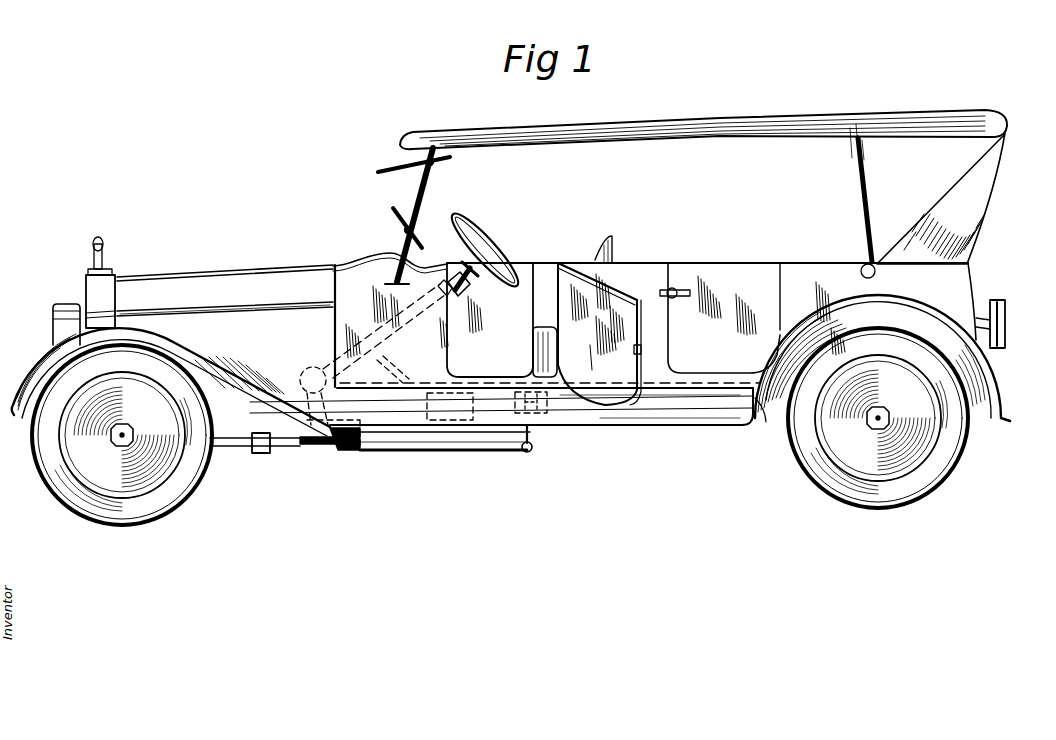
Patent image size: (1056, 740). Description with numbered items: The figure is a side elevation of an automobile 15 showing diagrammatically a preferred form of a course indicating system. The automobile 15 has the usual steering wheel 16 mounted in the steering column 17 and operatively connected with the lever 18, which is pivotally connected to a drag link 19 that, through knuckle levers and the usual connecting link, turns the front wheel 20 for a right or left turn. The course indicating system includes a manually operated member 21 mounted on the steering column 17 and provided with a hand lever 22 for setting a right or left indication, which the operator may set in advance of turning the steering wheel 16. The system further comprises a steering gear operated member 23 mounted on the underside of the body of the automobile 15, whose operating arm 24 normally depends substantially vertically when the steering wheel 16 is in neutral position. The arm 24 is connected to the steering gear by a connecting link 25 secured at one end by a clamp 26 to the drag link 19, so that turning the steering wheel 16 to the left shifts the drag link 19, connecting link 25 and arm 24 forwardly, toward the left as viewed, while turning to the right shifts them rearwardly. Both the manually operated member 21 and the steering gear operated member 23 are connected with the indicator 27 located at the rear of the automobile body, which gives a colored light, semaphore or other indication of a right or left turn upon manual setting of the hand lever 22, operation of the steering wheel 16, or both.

The automobile 15 is at (657, 365).
The steering wheel 16 is at (477, 227).
The steering column 17 is at (448, 262).
The lever 18 is at (355, 460).
The drag link 19 is at (233, 447).
The front wheel 20 is at (132, 502).
The manually operated member 21 is at (477, 287).
The hand lever 22 is at (468, 300).
The steering gear operated member 23 is at (548, 400).
The operating arm 24 is at (533, 447).
The connecting link 25 is at (385, 453).
The clamp 26 is at (257, 453).
The indicator 27 is at (1012, 318).